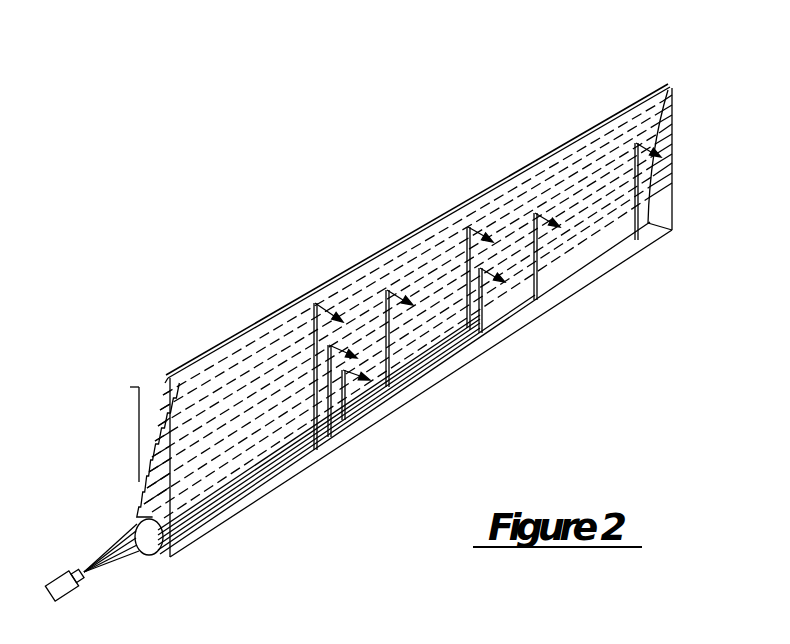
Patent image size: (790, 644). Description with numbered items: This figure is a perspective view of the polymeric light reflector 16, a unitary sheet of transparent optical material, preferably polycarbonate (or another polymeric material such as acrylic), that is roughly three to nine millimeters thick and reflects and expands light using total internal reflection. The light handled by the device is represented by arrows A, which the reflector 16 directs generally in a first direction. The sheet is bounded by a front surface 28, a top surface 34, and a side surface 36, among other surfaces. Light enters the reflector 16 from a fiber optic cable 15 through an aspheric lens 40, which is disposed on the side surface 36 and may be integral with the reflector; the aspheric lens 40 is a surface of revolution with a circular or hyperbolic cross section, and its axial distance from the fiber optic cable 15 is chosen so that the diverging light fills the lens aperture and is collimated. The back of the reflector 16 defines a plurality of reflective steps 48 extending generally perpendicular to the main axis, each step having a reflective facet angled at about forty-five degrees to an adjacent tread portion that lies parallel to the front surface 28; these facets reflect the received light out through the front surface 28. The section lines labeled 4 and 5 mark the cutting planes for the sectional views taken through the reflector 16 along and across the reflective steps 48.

The polymeric light reflector 16 is at (401, 322).
The front surface 28 is at (662, 212).
The top surface 34 is at (227, 345).
The reflective steps 48 is at (163, 402).
The side surface 36 is at (141, 512).
The aspheric lens 40 is at (148, 555).
The fiber optic cable 15 is at (62, 574).
The arrows representing light A is at (315, 305).
The section line 4- 4 is at (418, 418).
The section line 5- 5 is at (127, 397).